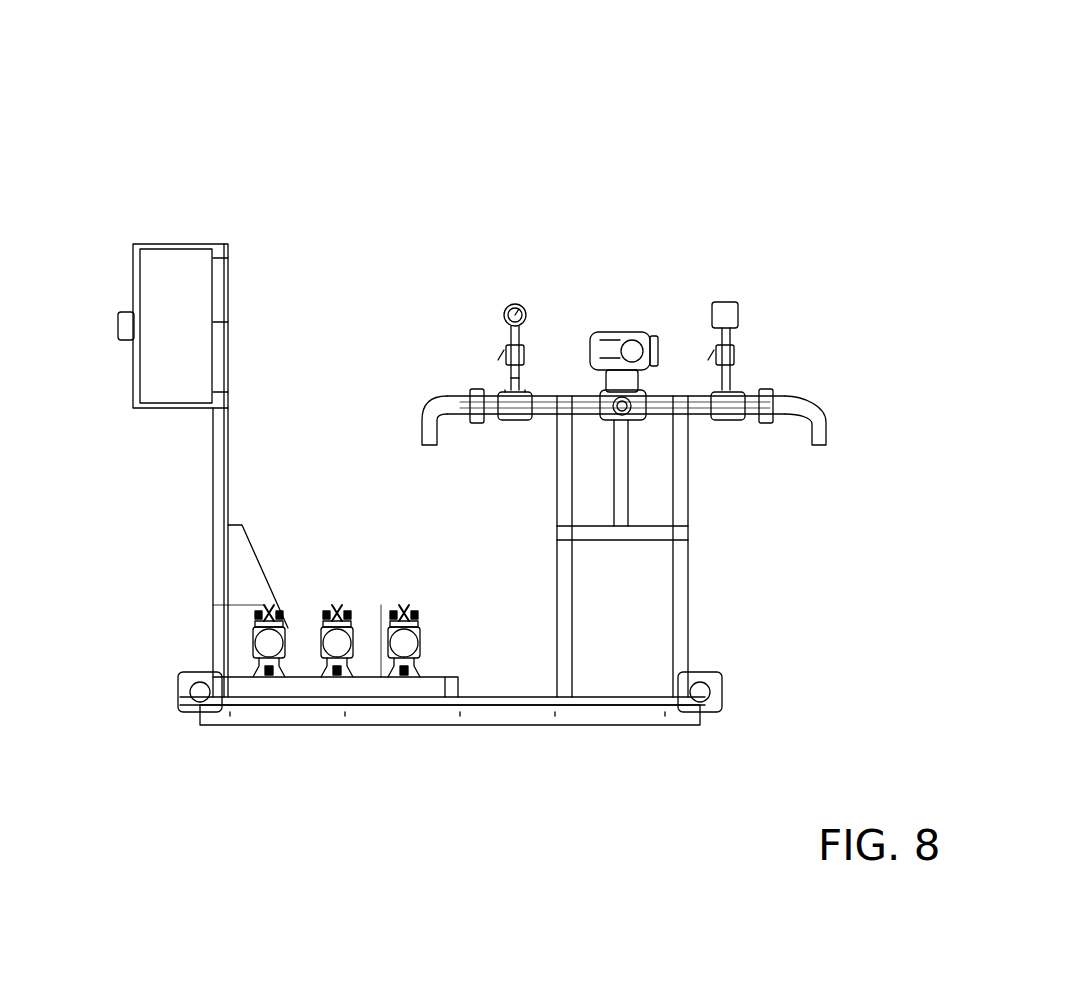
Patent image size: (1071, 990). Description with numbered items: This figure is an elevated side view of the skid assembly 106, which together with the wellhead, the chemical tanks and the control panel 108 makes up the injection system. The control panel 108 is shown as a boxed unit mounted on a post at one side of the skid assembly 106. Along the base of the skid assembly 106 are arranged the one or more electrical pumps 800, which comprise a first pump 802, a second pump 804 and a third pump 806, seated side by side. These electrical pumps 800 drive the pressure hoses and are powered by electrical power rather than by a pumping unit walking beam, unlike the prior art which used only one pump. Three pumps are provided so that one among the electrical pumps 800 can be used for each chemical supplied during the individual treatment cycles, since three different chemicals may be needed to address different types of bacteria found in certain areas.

The skid assembly 106 is at (805, 108).
The control panel 108 is at (191, 262).
The one or more electrical pumps 800 is at (157, 602).
The first pump 802 is at (256, 643).
The second pump 804 is at (351, 662).
The third pump 806 is at (403, 672).